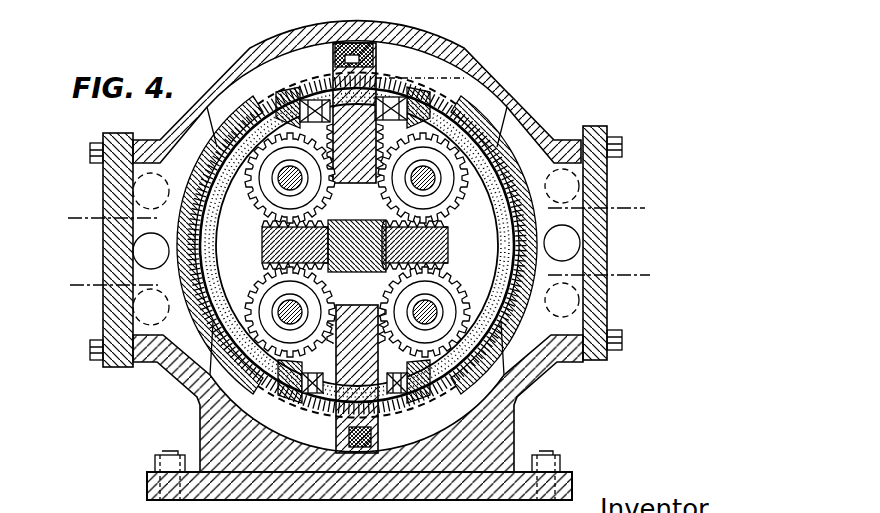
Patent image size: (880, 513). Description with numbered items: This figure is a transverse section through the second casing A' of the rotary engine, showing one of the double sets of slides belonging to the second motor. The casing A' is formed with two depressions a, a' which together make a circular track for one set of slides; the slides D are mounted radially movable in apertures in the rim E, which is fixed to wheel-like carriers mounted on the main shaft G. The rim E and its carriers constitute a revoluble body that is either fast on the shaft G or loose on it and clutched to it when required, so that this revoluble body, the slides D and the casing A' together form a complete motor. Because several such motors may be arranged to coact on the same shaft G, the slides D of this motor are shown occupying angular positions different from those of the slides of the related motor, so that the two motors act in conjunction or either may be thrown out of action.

The second casing A' is at (357, 92).
The depression a is at (357, 79).
The depression a' is at (357, 412).
The rim E is at (274, 100).
The slides D is at (373, 61).
The main shaft G is at (355, 233).